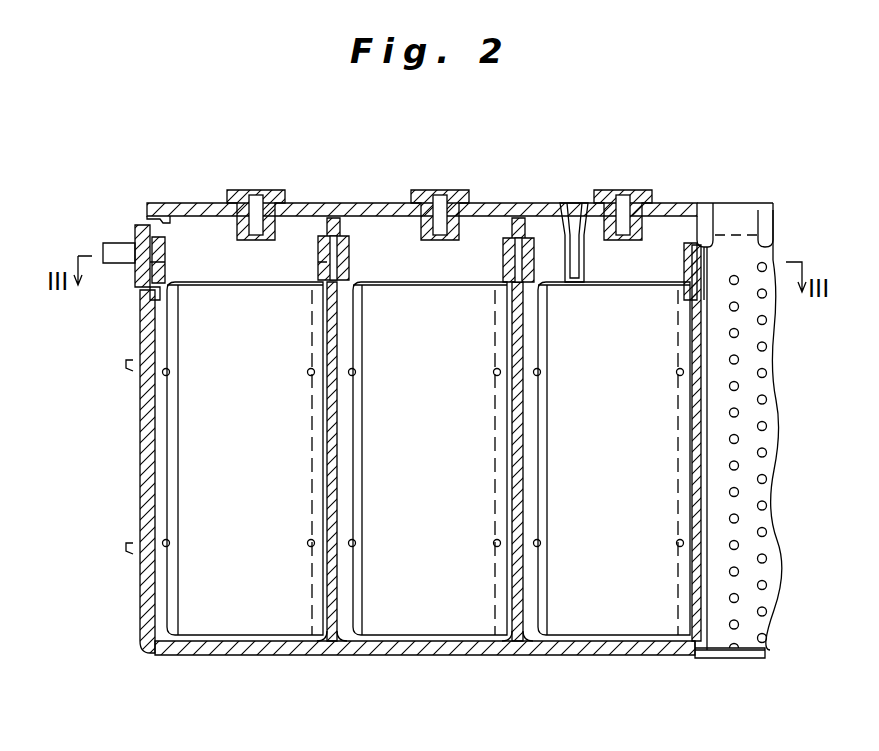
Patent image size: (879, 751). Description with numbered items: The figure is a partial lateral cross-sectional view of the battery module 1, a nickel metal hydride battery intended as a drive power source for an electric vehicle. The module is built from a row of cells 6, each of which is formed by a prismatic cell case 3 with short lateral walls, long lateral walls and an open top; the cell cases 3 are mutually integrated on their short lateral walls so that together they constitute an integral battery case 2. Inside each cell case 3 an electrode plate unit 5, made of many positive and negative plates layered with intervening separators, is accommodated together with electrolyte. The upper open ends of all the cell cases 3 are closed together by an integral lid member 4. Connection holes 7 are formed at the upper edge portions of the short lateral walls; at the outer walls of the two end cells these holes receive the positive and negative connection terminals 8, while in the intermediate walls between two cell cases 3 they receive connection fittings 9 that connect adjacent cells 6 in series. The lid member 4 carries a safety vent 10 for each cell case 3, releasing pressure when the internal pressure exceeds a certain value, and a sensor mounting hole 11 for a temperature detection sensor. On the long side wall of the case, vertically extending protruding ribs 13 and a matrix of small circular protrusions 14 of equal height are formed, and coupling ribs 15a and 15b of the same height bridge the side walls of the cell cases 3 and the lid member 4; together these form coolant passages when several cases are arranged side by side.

The battery module 1 is at (118, 445).
The integral battery case 2 is at (140, 518).
The cell case 3 is at (250, 650).
The lid member 4 is at (192, 212).
The electrode plate unit 5 is at (619, 465).
The cell 6 is at (280, 652).
The connection hole 7 is at (168, 256).
The connection terminal 8 is at (122, 252).
The connection fitting 9 is at (343, 240).
The safety vent 10 is at (272, 206).
The sensor mounting hole 11 is at (573, 232).
The protruding rib 13 is at (711, 650).
The circular protrusion 14 is at (760, 642).
The coupling rib 15a is at (713, 222).
The coupling rib 15b is at (764, 225).